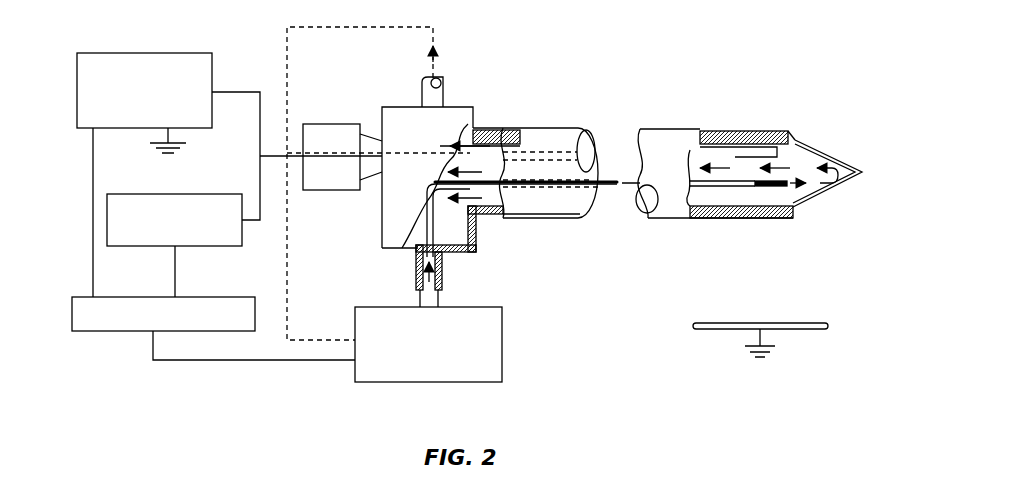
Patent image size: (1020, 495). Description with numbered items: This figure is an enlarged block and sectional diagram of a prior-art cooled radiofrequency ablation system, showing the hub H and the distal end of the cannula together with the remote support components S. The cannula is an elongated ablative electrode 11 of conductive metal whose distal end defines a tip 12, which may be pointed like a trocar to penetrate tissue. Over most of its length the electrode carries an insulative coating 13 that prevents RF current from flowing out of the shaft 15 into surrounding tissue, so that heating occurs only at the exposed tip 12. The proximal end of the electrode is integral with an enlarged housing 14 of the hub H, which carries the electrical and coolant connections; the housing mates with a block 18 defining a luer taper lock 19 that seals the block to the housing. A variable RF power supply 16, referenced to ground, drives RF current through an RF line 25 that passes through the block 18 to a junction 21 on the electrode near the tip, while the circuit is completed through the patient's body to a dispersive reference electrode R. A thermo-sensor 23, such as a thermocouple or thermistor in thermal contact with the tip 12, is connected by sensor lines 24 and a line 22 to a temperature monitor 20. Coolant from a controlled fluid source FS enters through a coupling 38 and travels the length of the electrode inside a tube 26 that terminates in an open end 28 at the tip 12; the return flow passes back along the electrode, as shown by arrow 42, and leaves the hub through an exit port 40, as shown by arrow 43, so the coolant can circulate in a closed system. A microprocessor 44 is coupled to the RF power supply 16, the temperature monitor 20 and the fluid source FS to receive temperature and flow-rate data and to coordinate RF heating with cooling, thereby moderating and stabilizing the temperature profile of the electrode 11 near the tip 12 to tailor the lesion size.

The RF power supply 16 is at (109, 53).
The temperature monitor 20 is at (146, 194).
The microprocessor 44 is at (146, 297).
The line 22 is at (253, 224).
The fluid source FS is at (504, 327).
The block 18 is at (342, 124).
The luer taper lock 19 is at (375, 138).
The hub H is at (457, 95).
The exit port 40 is at (422, 86).
The arrow 43 is at (437, 68).
The RF line 25 is at (496, 128).
The sensor lines 24 is at (510, 134).
The arrow 42 is at (478, 216).
The housing 14 is at (474, 238).
The coupling 38 is at (437, 278).
The shaft 15 is at (765, 192).
The tube 26 is at (690, 212).
The insulative coating 13 is at (712, 131).
The ablative electrode 11 is at (752, 218).
The junction 21 is at (748, 137).
The thermo-sensor 23 is at (797, 142).
The tip 12 is at (825, 200).
The open end 28 is at (775, 190).
The reference electrode R is at (828, 326).
The support components S is at (112, 378).